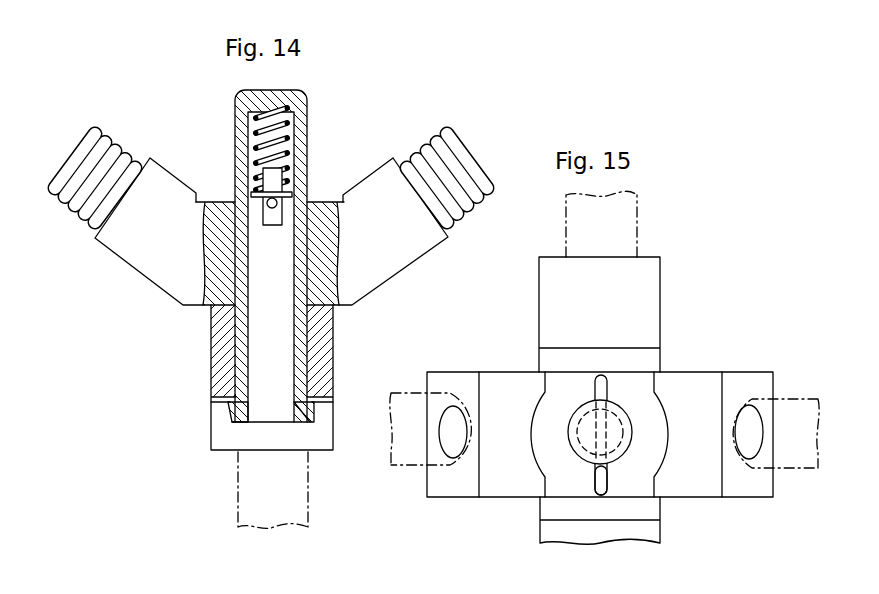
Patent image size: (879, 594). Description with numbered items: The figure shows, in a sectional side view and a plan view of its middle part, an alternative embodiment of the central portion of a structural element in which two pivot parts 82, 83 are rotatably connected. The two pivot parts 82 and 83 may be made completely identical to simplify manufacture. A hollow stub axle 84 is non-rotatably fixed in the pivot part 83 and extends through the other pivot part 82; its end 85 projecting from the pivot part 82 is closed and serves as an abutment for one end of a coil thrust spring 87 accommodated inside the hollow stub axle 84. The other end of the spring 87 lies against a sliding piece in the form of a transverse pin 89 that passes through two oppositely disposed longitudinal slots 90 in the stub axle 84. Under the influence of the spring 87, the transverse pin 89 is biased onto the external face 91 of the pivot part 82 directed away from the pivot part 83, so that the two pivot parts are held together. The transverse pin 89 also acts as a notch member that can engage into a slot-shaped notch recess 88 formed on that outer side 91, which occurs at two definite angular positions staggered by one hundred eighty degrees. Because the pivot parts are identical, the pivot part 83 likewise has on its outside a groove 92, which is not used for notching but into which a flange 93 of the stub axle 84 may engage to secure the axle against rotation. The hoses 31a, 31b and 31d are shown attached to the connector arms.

In FIG. 14, the pivot part 82 is at (147, 253).
In FIG. 15, the pivot part 82 is at (497, 378).
In FIG. 14, the pivot part 83 is at (218, 356).
In FIG. 15, the pivot part 83 is at (662, 290).
In FIG. 14, the hollow stub axle 84 is at (300, 157).
In FIG. 15, the hollow stub axle 84 is at (632, 420).
In FIG. 14, the end of the stub axle 85 is at (293, 96).
In FIG. 14, the coil thrust spring 87 is at (252, 133).
In FIG. 15, the notch recess 88 is at (601, 374).
In FIG. 14, the transverse pin 89 is at (290, 195).
In FIG. 15, the transverse pin 89 is at (603, 475).
In FIG. 14, the longitudinal slots 90 is at (274, 226).
In FIG. 14, the external face 91 is at (222, 200).
In FIG. 15, the external face 91 is at (632, 382).
In FIG. 14, the groove 92 is at (218, 398).
In FIG. 14, the flange 93 is at (228, 415).
In FIG. 14, the flexible hose 31a is at (433, 143).
In FIG. 15, the flexible hose 31a is at (795, 398).
In FIG. 14, the flexible hose 31b is at (115, 148).
In FIG. 15, the flexible hose 31b is at (410, 468).
In FIG. 14, the hose 31d is at (252, 500).
In FIG. 15, the hose 31d is at (642, 218).